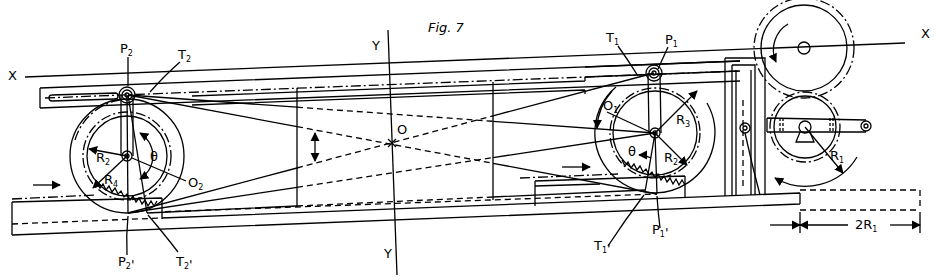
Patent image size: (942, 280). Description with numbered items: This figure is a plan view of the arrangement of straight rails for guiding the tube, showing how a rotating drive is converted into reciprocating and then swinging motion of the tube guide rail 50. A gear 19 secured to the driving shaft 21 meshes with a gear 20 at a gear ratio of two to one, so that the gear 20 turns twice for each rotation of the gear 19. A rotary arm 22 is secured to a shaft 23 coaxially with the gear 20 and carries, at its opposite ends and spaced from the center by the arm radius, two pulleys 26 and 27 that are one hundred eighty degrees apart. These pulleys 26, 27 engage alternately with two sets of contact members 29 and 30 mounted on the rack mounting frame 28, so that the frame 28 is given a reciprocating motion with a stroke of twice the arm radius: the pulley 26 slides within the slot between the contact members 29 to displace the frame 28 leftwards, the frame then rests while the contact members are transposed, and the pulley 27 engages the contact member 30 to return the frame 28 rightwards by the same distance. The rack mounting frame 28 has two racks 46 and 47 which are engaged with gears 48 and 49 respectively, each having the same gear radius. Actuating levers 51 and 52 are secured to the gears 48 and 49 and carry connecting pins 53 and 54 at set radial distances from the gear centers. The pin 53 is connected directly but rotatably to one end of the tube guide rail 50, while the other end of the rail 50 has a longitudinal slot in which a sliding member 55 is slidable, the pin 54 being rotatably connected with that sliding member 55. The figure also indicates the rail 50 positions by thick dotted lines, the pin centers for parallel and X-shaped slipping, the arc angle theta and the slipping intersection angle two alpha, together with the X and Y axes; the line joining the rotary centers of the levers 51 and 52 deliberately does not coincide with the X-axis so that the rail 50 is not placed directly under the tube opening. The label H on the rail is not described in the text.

The gear 19 is at (851, 45).
The gear 20 is at (838, 111).
The driving shaft 21 is at (810, 47).
The rotary arm 22 is at (862, 138).
The shaft 23 is at (804, 140).
The pulley 26 is at (872, 124).
The pulley 27 is at (740, 124).
The rack mounting frame 28 is at (706, 208).
The contact members 29 is at (745, 200).
The contact members 30 is at (740, 58).
The rack 46 is at (575, 196).
The rack 47 is at (70, 222).
The gear 48 is at (700, 152).
The gear 49 is at (76, 146).
The tube guide rail 50 is at (312, 80).
The actuating lever 51 is at (665, 79).
The actuating lever 52 is at (100, 106).
The connecting pin 53 is at (651, 65).
The connecting pin 54 is at (140, 90).
The sliding member 55 is at (112, 94).
The slotted bar H is at (72, 95).